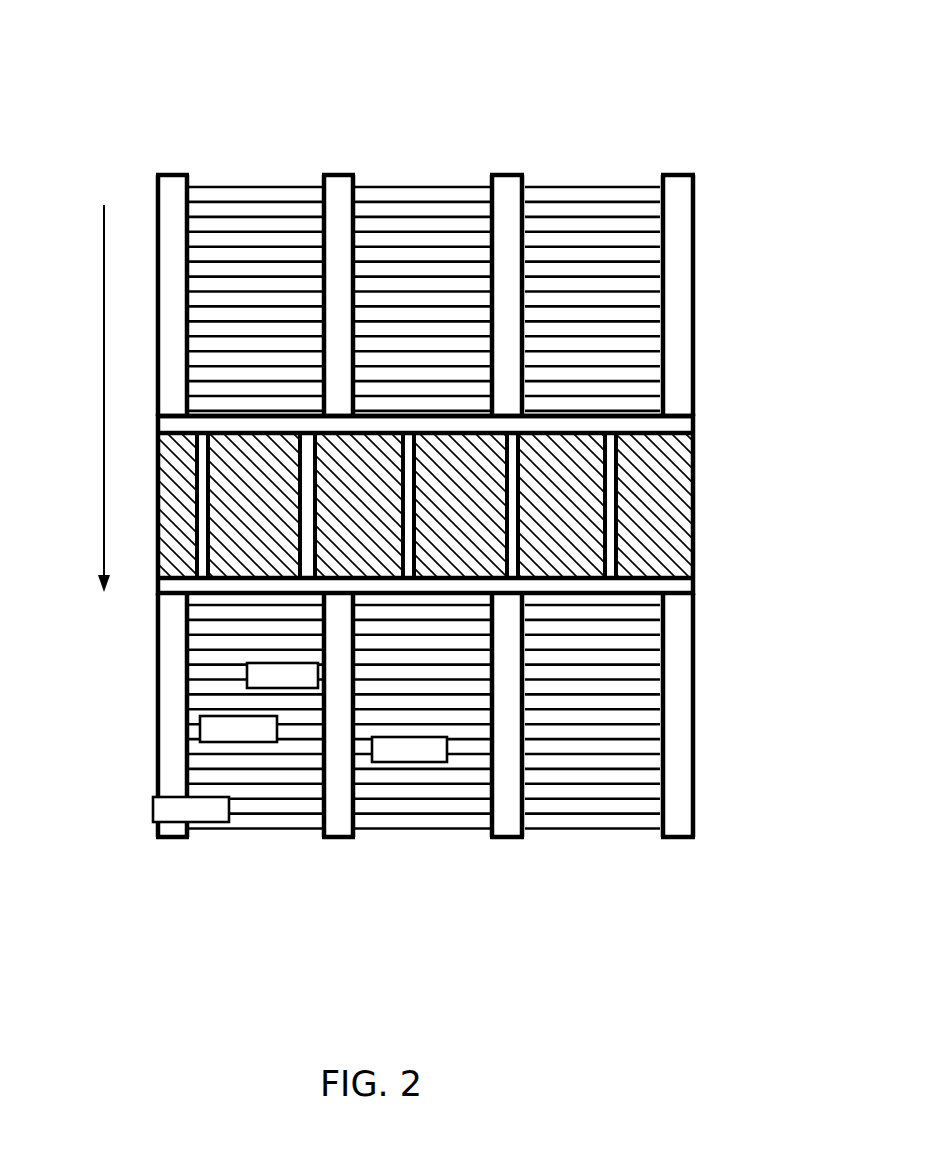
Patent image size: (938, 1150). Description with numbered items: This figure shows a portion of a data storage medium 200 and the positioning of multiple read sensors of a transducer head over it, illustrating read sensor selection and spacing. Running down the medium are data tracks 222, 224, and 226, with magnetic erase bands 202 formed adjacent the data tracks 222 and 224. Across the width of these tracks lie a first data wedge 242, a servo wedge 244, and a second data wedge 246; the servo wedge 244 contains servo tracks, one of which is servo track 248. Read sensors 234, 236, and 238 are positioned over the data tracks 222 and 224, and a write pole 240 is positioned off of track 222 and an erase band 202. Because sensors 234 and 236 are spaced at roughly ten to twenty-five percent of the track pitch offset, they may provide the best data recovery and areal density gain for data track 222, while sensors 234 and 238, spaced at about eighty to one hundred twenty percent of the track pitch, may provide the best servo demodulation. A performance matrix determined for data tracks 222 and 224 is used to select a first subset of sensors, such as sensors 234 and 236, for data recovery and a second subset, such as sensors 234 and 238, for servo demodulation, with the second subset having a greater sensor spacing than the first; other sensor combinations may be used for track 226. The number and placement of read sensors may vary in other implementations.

The data storage medium 200 is at (95, 72).
The magnetic erase band 202 is at (172, 839).
The data track 222 is at (191, 176).
The data track 224 is at (360, 176).
The data track 226 is at (657, 176).
The read sensor 234 is at (247, 675).
The read sensor 236 is at (200, 728).
The read sensor 238 is at (408, 763).
The write pole 240 is at (153, 810).
The data wedge 242 is at (470, 277).
The servo wedge 244 is at (471, 504).
The data wedge 246 is at (706, 835).
The servo track 248 is at (243, 465).